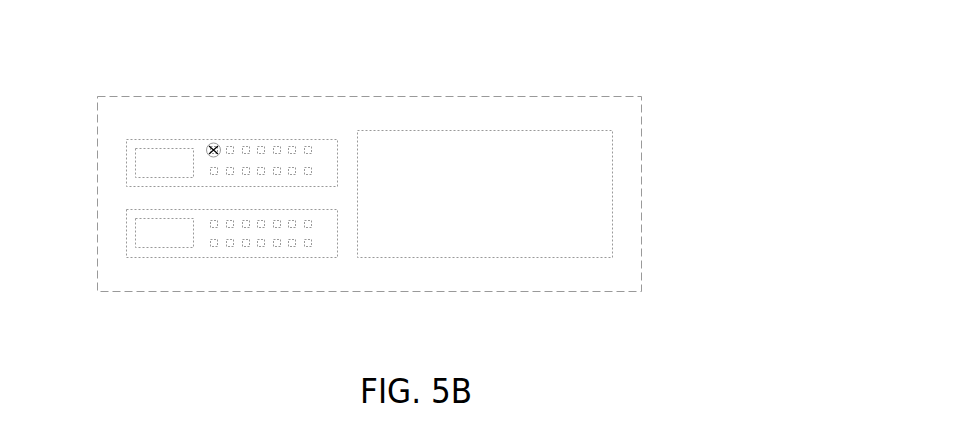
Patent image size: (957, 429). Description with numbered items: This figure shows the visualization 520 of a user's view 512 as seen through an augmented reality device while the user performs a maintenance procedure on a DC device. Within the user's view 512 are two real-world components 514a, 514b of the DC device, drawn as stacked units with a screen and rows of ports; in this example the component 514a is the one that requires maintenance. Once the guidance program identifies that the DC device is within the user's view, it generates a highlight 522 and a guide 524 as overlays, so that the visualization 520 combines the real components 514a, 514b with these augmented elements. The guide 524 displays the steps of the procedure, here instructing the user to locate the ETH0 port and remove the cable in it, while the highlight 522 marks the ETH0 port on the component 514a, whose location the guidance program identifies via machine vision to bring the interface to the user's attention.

The user's view 512 is at (160, 96).
The component 514a is at (126, 166).
The component 514b is at (126, 238).
The visualization 520 is at (688, 138).
The highlight 522 is at (222, 142).
The guide 524 is at (612, 194).